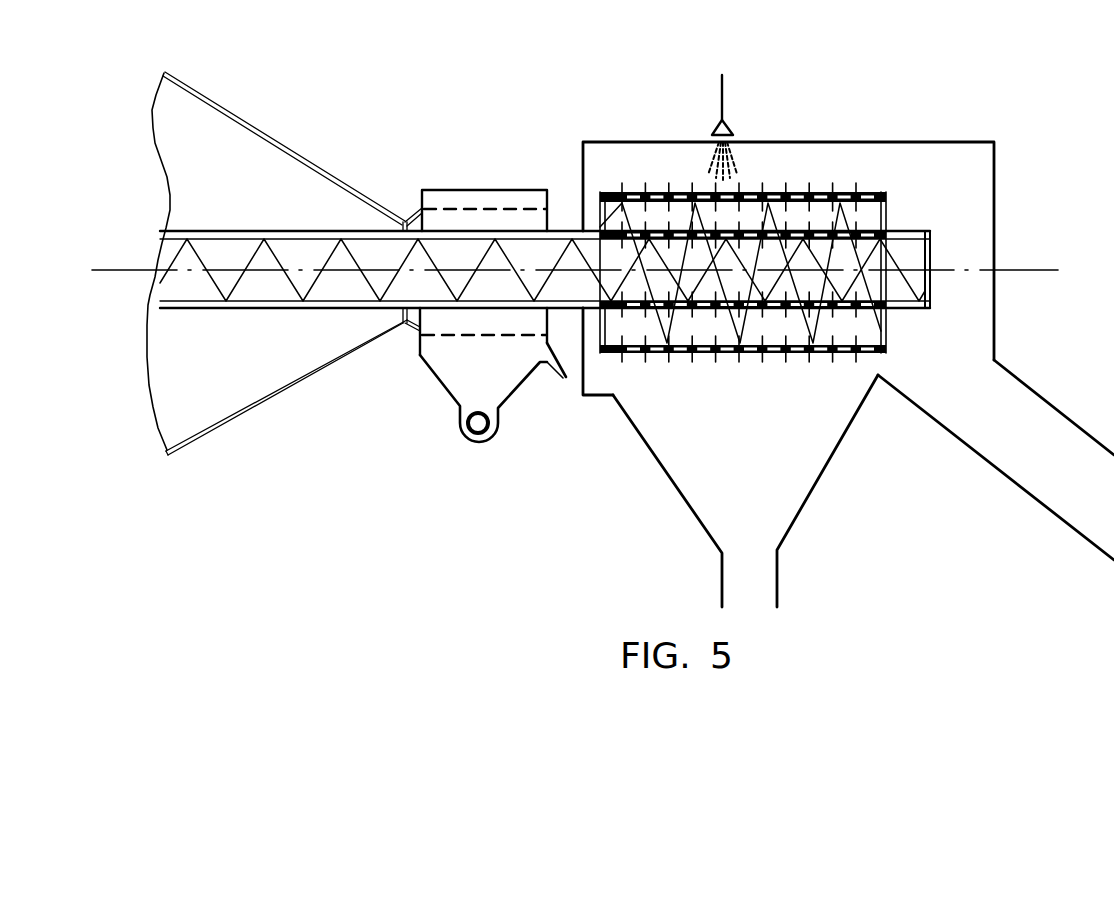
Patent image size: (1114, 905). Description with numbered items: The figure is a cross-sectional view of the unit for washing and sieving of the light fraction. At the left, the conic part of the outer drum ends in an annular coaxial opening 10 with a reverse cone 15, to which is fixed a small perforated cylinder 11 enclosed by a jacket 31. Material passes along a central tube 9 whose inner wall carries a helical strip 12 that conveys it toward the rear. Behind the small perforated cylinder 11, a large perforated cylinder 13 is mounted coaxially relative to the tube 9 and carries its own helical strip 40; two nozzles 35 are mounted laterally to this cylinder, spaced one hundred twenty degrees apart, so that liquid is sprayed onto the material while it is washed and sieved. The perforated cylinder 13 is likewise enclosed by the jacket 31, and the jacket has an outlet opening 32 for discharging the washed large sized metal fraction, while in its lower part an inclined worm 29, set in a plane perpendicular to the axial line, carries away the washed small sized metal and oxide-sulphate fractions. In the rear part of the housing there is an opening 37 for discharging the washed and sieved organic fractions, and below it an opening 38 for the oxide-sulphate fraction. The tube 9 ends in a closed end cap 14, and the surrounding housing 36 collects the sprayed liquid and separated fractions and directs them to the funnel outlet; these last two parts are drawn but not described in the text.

The tube 9 is at (888, 233).
The annular coaxial opening 10 is at (423, 217).
The small perforated cylinder 11 is at (468, 208).
The helical strip 12 is at (358, 237).
The large perforated cylinder 13 is at (788, 203).
The tube end cap 14 is at (930, 236).
The reverse cone 15 is at (413, 332).
The inclined worm 29 is at (460, 412).
The jacket 31 is at (530, 189).
The outlet opening 32 is at (557, 375).
The nozzles 35 is at (724, 112).
The housing 36 is at (994, 198).
The opening 37 is at (1045, 398).
The opening 38 is at (780, 582).
The helical strip 40 is at (822, 306).